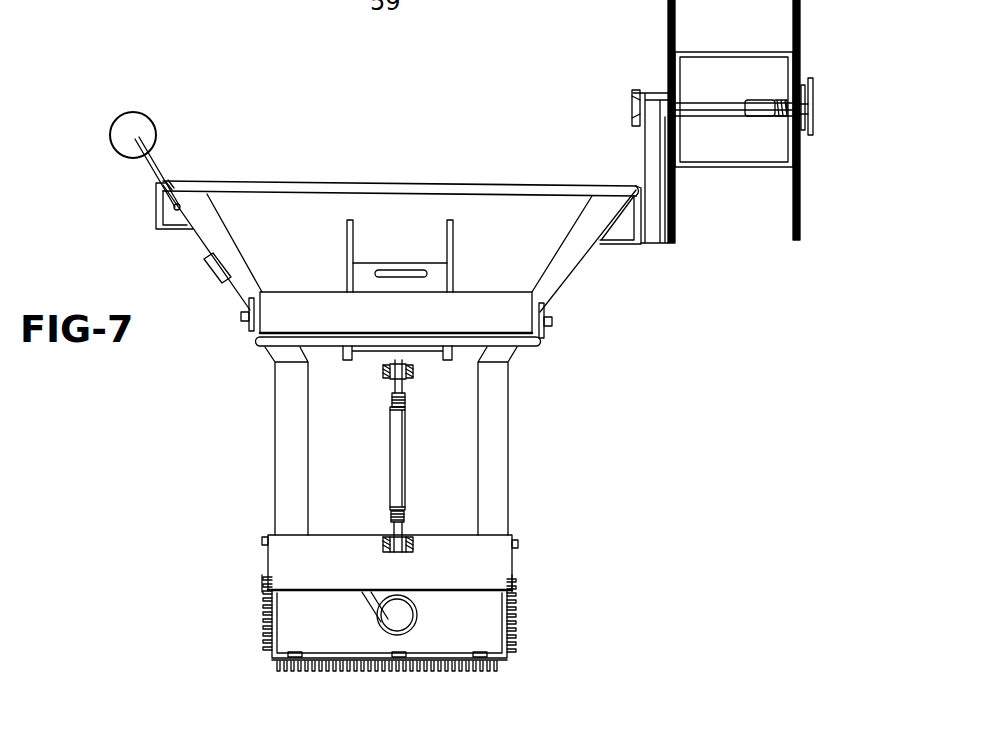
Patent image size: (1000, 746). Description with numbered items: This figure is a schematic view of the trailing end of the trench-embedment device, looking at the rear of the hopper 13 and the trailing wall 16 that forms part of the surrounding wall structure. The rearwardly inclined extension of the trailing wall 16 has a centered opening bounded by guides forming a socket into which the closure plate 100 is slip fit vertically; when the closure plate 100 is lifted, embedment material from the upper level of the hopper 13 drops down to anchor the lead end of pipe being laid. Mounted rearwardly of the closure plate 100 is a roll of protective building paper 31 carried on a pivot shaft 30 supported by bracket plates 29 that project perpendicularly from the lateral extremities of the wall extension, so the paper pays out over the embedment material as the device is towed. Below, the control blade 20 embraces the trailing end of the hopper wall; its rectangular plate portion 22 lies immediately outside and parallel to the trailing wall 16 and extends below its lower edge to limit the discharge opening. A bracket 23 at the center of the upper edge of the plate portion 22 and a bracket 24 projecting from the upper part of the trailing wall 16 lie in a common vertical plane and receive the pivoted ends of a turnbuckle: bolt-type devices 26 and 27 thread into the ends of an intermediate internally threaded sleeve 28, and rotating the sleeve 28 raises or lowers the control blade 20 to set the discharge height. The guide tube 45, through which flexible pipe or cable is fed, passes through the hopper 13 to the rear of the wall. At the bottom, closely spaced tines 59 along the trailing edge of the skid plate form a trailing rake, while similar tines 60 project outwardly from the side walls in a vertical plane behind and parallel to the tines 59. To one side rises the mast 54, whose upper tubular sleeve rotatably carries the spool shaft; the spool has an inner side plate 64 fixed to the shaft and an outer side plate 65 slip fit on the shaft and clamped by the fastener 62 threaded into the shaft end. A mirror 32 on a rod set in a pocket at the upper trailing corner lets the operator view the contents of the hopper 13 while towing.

The hopper 13 is at (498, 181).
The trailing wall 16 is at (347, 470).
The control blade 20 is at (262, 558).
The rectangular plate portion 22 is at (326, 571).
The bracket 23 is at (385, 530).
The bracket 24 is at (393, 377).
The bolt-type device 26 is at (405, 530).
The bolt-type device 27 is at (405, 403).
The internally threaded sleeve 28 is at (408, 477).
The bracket plates 29 is at (547, 338).
The pivot shaft 30 is at (552, 322).
The roll of protective building paper 31 is at (464, 331).
The mirror 32 is at (113, 127).
The guide tube 45 is at (440, 626).
The mast 54 is at (645, 140).
The tines 59 is at (433, 676).
The tines 60 is at (262, 638).
The fastener 62 is at (813, 132).
The side plate 64 is at (668, 20).
The outer side plate 65 is at (802, 13).
The closure plate 100 is at (437, 263).